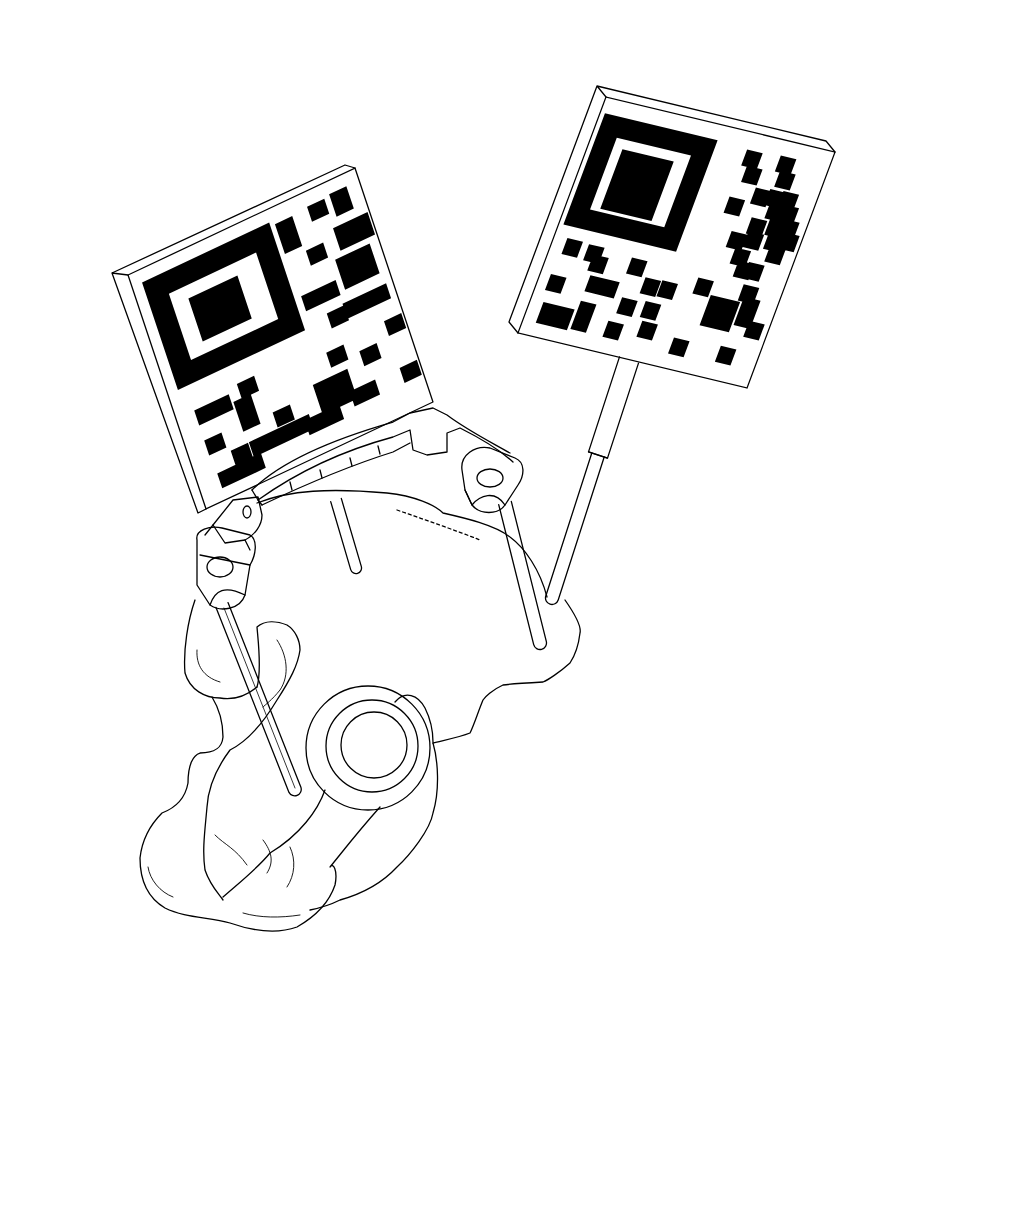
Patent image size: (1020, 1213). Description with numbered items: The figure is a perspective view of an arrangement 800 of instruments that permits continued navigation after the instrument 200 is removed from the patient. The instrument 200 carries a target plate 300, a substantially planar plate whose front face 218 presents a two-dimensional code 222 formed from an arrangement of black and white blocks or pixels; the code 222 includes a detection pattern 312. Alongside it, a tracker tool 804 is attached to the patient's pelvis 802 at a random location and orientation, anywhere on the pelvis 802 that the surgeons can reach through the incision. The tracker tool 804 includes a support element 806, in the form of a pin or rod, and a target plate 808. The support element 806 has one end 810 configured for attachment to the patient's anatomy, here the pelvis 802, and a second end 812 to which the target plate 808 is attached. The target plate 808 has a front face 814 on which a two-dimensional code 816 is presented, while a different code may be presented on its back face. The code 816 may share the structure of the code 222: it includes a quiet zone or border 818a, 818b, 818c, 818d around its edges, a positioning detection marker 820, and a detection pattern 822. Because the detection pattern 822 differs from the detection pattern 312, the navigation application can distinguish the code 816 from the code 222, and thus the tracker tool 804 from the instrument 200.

The arrangement of instruments 800 is at (213, 105).
The front face 218 is at (325, 190).
The target plate 300 is at (163, 240).
The detection pattern 312 is at (280, 338).
The two-dimensional code 222 is at (305, 373).
The instrument 200 is at (157, 555).
The tracker tool 804 is at (757, 402).
The target plate 808 is at (805, 133).
The positioning detection marker 820 is at (640, 182).
The detection pattern 822 is at (679, 244).
The front face 814 is at (763, 218).
The quiet zone 818a is at (734, 156).
The quiet zone 818b is at (576, 249).
The quiet zone 818c is at (581, 322).
The quiet zone 818d is at (748, 316).
The two-dimensional code 816 is at (716, 265).
The support element 806 is at (595, 530).
The second end 812 is at (640, 350).
The one end 810 is at (565, 603).
The pelvis 802 is at (537, 686).